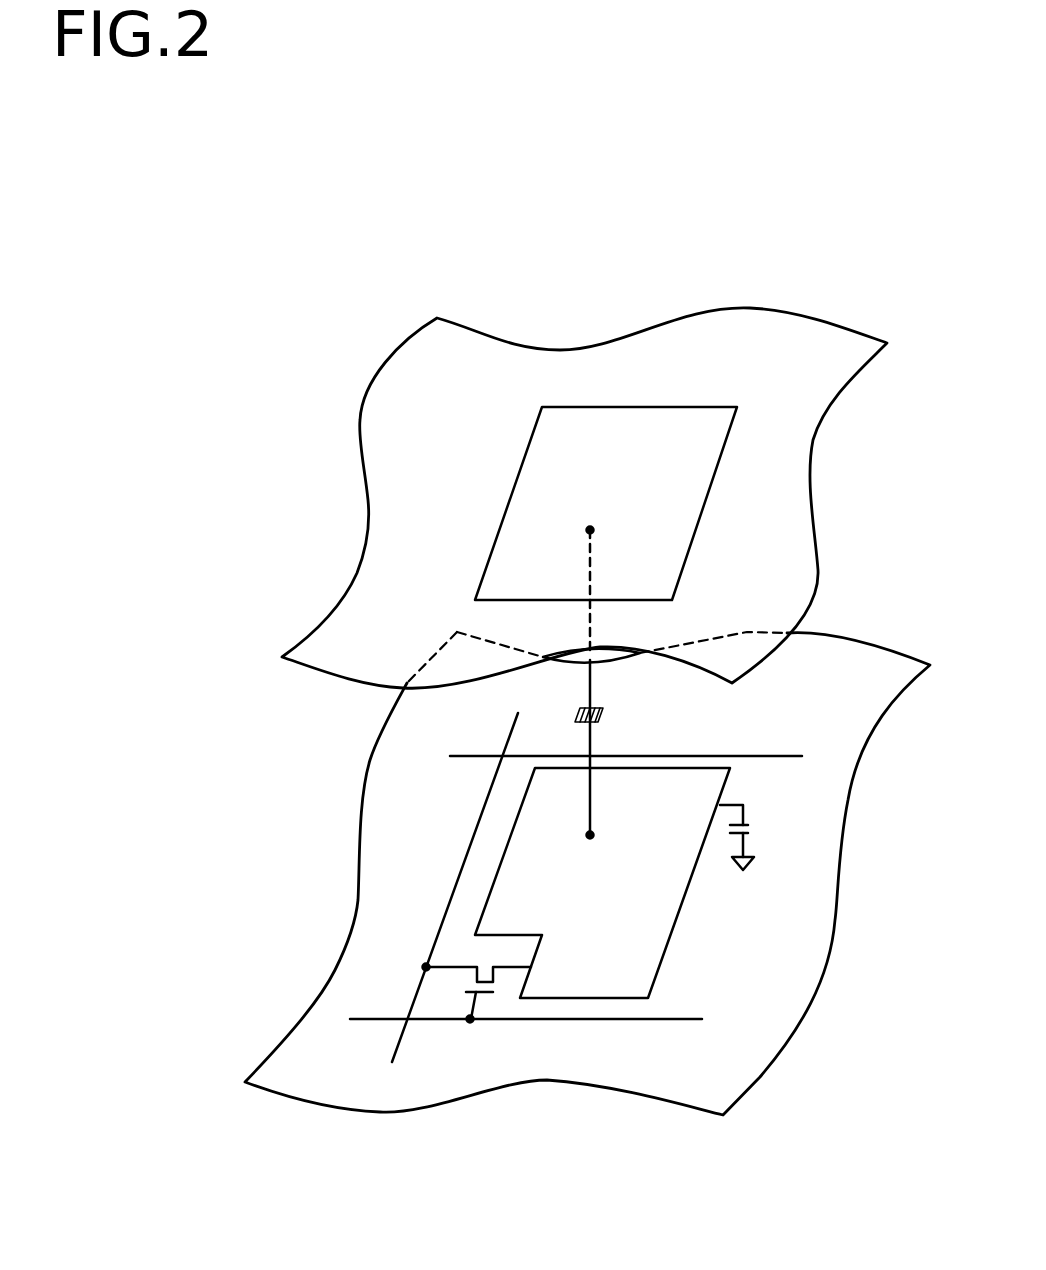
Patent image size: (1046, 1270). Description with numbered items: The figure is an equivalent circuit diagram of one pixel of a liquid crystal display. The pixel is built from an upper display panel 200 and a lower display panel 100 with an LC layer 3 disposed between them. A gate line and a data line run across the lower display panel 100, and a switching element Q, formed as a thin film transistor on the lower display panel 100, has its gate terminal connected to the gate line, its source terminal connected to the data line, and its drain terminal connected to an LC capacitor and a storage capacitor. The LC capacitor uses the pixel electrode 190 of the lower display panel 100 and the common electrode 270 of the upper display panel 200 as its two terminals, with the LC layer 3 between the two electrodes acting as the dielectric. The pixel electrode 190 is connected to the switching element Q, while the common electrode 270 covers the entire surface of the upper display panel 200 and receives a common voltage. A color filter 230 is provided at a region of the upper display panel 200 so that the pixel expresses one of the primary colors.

The LC layer 3 is at (268, 769).
The lower display panel 100 is at (862, 852).
The pixel electrode 190 is at (671, 937).
The upper display panel 200 is at (608, 498).
The color filter 230 is at (702, 518).
The common electrode 270 is at (811, 470).